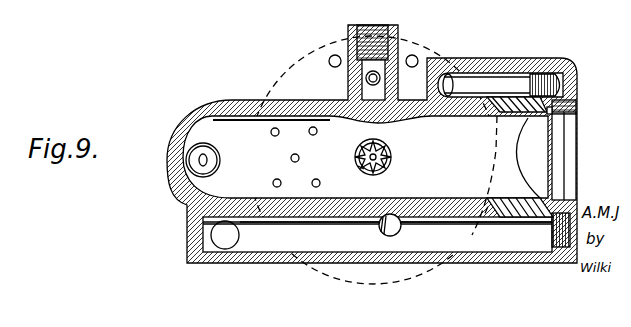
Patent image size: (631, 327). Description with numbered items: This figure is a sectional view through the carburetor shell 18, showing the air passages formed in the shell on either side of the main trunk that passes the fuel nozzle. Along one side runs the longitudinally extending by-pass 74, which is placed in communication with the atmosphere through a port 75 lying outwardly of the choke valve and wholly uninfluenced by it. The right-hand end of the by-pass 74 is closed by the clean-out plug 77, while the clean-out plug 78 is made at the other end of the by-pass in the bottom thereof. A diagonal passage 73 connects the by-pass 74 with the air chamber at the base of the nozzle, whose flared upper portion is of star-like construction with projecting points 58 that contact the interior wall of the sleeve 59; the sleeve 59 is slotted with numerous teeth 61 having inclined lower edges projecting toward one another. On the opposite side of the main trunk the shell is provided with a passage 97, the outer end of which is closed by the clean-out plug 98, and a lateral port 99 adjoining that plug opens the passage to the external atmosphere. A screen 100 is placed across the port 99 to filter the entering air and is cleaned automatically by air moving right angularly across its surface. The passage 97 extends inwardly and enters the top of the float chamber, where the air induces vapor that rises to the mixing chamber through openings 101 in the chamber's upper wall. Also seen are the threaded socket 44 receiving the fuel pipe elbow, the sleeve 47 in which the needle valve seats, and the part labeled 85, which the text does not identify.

The threaded socket 44 is at (378, 28).
The sleeve 47 is at (362, 78).
The passage 97 is at (500, 80).
The clean-out plug 98 is at (560, 86).
The lateral port 99 is at (520, 100).
The carburetor shell 18 is at (574, 103).
The screen 100 is at (499, 116).
The openings 101 is at (310, 135).
The projecting points 58 is at (391, 151).
The sleeve 59 is at (392, 163).
The teeth 61 is at (359, 170).
The clean-out plug 78 is at (222, 247).
The by-pass 74 is at (314, 236).
The diagonal passage 73 is at (389, 235).
The port 75 is at (498, 217).
The clean-out plug 77 is at (550, 228).
The lever 85 is at (169, 6).